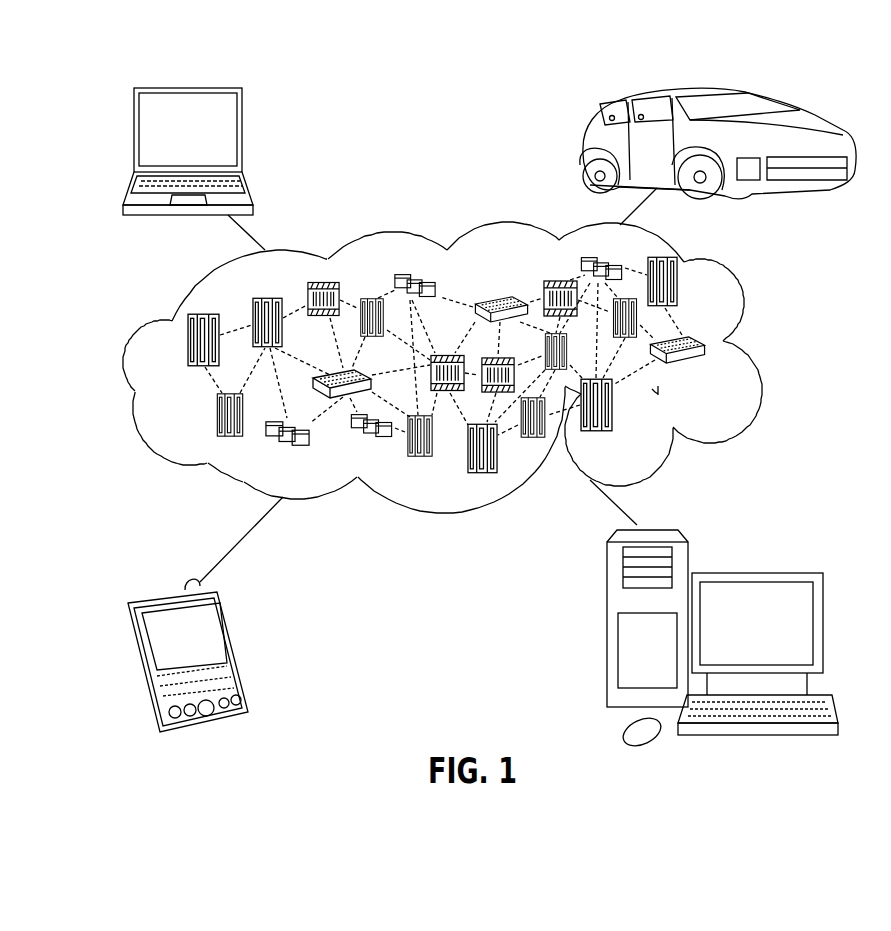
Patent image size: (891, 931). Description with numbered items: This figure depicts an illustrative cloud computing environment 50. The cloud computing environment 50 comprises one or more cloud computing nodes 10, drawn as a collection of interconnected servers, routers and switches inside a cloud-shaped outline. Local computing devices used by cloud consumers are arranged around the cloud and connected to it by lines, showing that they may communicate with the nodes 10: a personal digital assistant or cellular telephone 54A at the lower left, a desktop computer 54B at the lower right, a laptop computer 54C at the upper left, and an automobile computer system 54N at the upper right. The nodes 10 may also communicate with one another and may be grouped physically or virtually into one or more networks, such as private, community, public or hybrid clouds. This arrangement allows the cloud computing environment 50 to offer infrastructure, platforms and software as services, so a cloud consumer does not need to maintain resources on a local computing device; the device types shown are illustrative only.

The cloud computing nodes 10 is at (712, 372).
The cloud computing environment 50 is at (757, 347).
The personal digital assistant (PDA) or cellular telephone 54A is at (235, 647).
The desktop computer 54B is at (755, 572).
The laptop computer 54C is at (243, 137).
The automobile computer system 54N is at (582, 148).